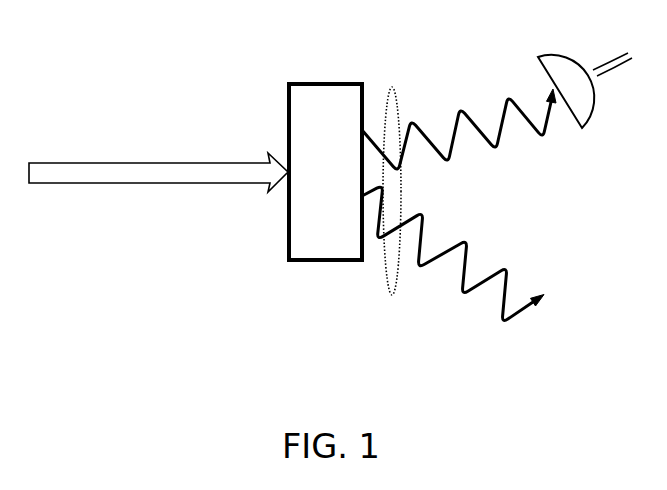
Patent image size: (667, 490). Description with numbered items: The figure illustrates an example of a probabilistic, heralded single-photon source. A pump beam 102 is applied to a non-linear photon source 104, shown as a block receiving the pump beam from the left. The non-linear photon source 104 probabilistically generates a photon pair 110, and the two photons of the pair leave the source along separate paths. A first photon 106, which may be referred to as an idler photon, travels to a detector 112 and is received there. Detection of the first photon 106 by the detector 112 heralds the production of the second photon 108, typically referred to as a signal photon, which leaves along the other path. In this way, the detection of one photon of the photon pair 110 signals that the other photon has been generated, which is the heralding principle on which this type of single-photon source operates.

The pump beam 102 is at (168, 184).
The non-linear photon source 104 is at (310, 262).
The first photon 106 is at (459, 138).
The second photon 108 is at (453, 261).
The photon pair 110 is at (392, 88).
The detector 112 is at (582, 127).